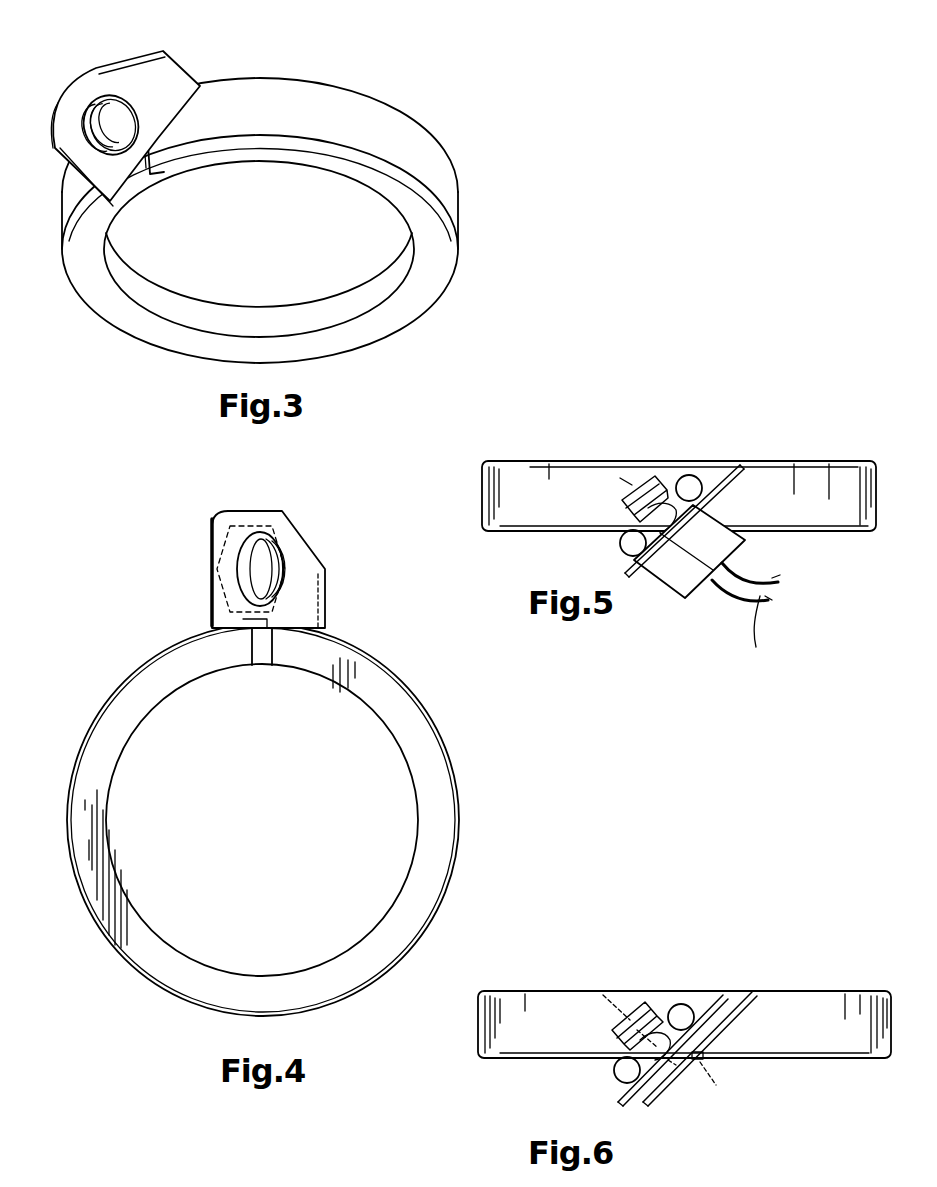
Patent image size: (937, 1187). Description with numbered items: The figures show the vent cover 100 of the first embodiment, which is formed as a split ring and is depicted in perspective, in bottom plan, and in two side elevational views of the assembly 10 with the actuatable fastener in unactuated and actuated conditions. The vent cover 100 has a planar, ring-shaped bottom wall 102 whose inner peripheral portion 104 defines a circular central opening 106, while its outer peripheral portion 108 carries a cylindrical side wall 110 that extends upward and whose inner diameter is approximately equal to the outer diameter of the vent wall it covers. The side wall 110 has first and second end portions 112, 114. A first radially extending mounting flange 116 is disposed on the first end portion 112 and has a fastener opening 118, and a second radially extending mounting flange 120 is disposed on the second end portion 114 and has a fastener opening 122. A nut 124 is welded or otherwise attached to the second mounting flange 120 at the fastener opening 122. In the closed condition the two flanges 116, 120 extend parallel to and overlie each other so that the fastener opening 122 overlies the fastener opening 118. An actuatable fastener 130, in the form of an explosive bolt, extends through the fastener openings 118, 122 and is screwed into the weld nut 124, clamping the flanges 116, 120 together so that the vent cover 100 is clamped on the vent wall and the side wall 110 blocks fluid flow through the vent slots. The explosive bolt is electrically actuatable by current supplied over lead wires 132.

In FIG. 3, the clamp assembly 10 is at (299, 190).
In FIG. 4, the clamp assembly 10 is at (276, 793).
In FIG. 5, the clamp assembly 10 is at (680, 537).
In FIG. 6, the clamp assembly 10 is at (673, 1042).
In FIG. 3, the vent cover 100 is at (307, 198).
In FIG. 4, the vent cover 100 is at (276, 819).
In FIG. 5, the vent cover 100 is at (680, 547).
In FIG. 6, the vent cover 100 is at (684, 1035).
In FIG. 3, the bottom wall 102 is at (421, 296).
In FIG. 4, the bottom wall 102 is at (368, 976).
In FIG. 3, the inner peripheral portion 104 is at (396, 215).
In FIG. 4, the inner peripheral portion 104 is at (140, 912).
In FIG. 3, the central opening 106 is at (290, 271).
In FIG. 4, the central opening 106 is at (288, 901).
In FIG. 3, the outer peripheral portion 108 is at (455, 265).
In FIG. 4, the outer peripheral portion 108 is at (85, 791).
In FIG. 3, the side wall 110 is at (420, 158).
In FIG. 4, the side wall 110 is at (452, 766).
In FIG. 5, the side wall 110 is at (548, 500).
In FIG. 6, the side wall 110 is at (797, 1030).
In FIG. 3, the first end portion 112 is at (215, 101).
In FIG. 4, the first end portion 112 is at (320, 653).
In FIG. 5, the first end portion 112 is at (750, 515).
In FIG. 6, the first end portion 112 is at (737, 1038).
In FIG. 3, the second end portion 114 is at (118, 222).
In FIG. 4, the second end portion 114 is at (195, 662).
In FIG. 5, the second end portion 114 is at (598, 515).
In FIG. 6, the second end portion 114 is at (672, 994).
In FIG. 3, the first radially extending mounting flange 116 is at (152, 112).
In FIG. 4, the first radially extending mounting flange 116 is at (257, 569).
In FIG. 5, the first radially extending mounting flange 116 is at (740, 478).
In FIG. 6, the first radially extending mounting flange 116 is at (667, 1088).
In FIG. 3, the fastener opening 118 is at (133, 101).
In FIG. 4, the fastener opening 118 is at (282, 552).
In FIG. 6, the fastener opening 118 is at (712, 1070).
In FIG. 4, the second radially extending mounting flange 120 is at (211, 613).
In FIG. 5, the second radially extending mounting flange 120 is at (722, 462).
In FIG. 6, the second radially extending mounting flange 120 is at (713, 1000).
In FIG. 6, the fastener opening 122 is at (620, 1075).
In FIG. 3, the nut 124 is at (72, 88).
In FIG. 4, the nut 124 is at (210, 560).
In FIG. 5, the nut 124 is at (686, 484).
In FIG. 6, the nut 124 is at (668, 1025).
In FIG. 5, the actuatable fastener 130 is at (682, 600).
In FIG. 5, the lead wires 132 is at (749, 619).